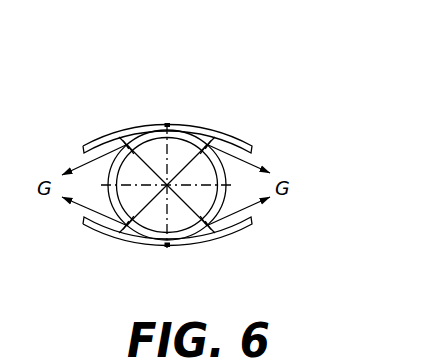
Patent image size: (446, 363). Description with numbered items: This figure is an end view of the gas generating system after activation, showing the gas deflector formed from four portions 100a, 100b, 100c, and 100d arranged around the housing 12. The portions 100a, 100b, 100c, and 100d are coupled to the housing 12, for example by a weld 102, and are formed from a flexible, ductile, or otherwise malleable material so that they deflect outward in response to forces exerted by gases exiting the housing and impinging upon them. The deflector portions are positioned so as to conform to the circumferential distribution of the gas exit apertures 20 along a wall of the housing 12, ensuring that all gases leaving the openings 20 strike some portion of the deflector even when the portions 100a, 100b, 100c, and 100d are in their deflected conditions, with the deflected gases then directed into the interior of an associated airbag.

The housing 12 is at (146, 243).
The gas exit apertures 20 is at (206, 132).
The gas deflector portion 100a is at (108, 131).
The gas deflector portion 100b is at (234, 131).
The gas deflector portion 100c is at (109, 238).
The gas deflector portion 100d is at (241, 239).
The weld 102 is at (166, 124).